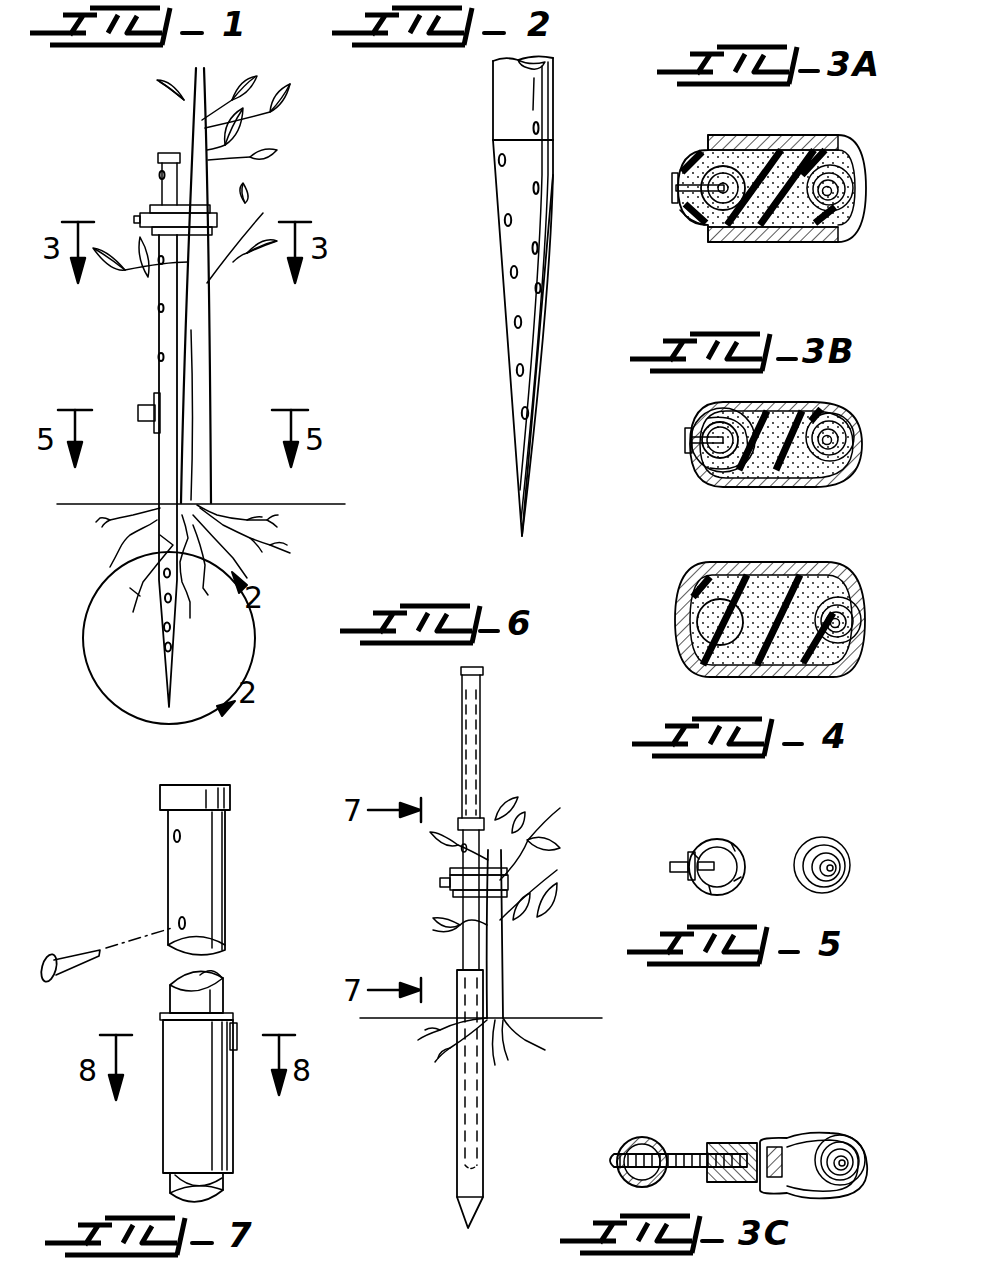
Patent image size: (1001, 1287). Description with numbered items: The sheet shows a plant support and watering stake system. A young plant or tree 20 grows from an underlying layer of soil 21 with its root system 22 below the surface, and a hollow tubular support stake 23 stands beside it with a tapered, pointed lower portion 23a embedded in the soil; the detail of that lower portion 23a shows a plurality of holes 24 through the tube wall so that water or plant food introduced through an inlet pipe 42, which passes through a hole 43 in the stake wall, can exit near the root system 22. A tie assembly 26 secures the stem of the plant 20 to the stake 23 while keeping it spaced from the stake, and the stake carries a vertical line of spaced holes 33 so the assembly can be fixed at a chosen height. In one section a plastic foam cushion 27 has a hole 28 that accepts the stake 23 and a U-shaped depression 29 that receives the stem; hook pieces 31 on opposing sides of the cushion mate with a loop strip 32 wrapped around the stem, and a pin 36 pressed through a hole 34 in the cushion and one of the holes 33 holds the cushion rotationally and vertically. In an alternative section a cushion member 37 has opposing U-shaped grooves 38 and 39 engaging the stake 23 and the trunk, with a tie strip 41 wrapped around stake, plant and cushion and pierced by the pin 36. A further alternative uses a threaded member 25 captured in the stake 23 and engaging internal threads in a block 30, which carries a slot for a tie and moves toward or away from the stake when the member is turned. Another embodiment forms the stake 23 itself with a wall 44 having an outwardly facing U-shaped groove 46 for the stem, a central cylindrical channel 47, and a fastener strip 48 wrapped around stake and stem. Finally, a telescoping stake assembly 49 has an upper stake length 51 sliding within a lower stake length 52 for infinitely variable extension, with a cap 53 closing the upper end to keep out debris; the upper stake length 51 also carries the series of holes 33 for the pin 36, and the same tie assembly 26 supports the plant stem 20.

In FIG. 1, the plant or tree 20 is at (211, 350).
In FIG. 3A, the plant or tree 20 is at (845, 172).
In FIG. 3B, the plant or tree 20 is at (845, 418).
In FIG. 4, the plant or tree 20 is at (855, 598).
In FIG. 5, the plant or tree 20 is at (795, 860).
In FIG. 3C, the plant or tree 20 is at (822, 1138).
In FIG. 6, the plant or tree 20 is at (505, 965).
In FIG. 1, the underlying layer of soil 21 is at (308, 504).
In FIG. 6, the underlying layer of soil 21 is at (583, 1018).
In FIG. 1, the root system 22 is at (272, 528).
In FIG. 6, the root system 22 is at (512, 1045).
In FIG. 1, the support stake 23 is at (158, 328).
In FIG. 3A, the support stake 23 is at (684, 166).
In FIG. 3B, the support stake 23 is at (704, 470).
In FIG. 4, the support stake 23 is at (698, 640).
In FIG. 5, the support stake 23 is at (745, 878).
In FIG. 3C, the support stake 23 is at (636, 1138).
In FIG. 1, the lower portion of stake 23a is at (168, 680).
In FIG. 2, the lower portion of stake 23a is at (508, 350).
In FIG. 1, the holes 24 is at (171, 600).
In FIG. 2, the holes 24 is at (498, 162).
In FIG. 3C, the threaded member 25 is at (680, 1170).
In FIG. 1, the tie assembly 26 is at (140, 208).
In FIG. 3A, the tie assembly 26 is at (663, 138).
In FIG. 3B, the tie assembly 26 is at (672, 466).
In FIG. 4, the tie assembly 26 is at (770, 619).
In FIG. 3C, the tie assembly 26 is at (775, 1108).
In FIG. 6, the tie assembly 26 is at (520, 877).
In FIG. 3A, the cushion 27 is at (688, 216).
In FIG. 3A, the hole 28 is at (745, 170).
In FIG. 3A, the U-shaped depression 29 is at (859, 226).
In FIG. 3C, the block 30 is at (752, 1142).
In FIG. 3A, the hook side of hook and loop fastener 31 is at (692, 146).
In FIG. 3A, the loop side strip of hook and loop fastener 32 is at (790, 136).
In FIG. 1, the spaced holes 33 is at (158, 173).
In FIG. 3A, the spaced holes 33 is at (690, 232).
In FIG. 3B, the spaced holes 33 is at (688, 440).
In FIG. 6, the spaced holes 33 is at (460, 848).
In FIG. 7, the spaced holes 33 is at (172, 838).
In FIG. 3A, the hole in cushion 34 is at (680, 197).
In FIG. 3A, the pin 36 is at (670, 184).
In FIG. 3B, the pin 36 is at (683, 430).
In FIG. 7, the pin 36 is at (40, 960).
In FIG. 3B, the cushion member 37 is at (825, 480).
In FIG. 3B, the U-shaped groove 38 is at (755, 404).
In FIG. 3B, the U-shaped groove 39 is at (798, 410).
In FIG. 3B, the tie strip 41 is at (698, 406).
In FIG. 3C, the tie strip 41 is at (858, 1128).
In FIG. 1, the inlet pipe 42 is at (143, 406).
In FIG. 5, the inlet pipe 42 is at (675, 862).
In FIG. 5, the hole 43 is at (710, 860).
In FIG. 4, the wall 44 is at (845, 672).
In FIG. 4, the U-shaped groove 46 is at (836, 585).
In FIG. 4, the cylindrical channel 47 is at (690, 662).
In FIG. 4, the hook and loop fastener strip 48 is at (700, 562).
In FIG. 6, the telescoping stake assembly 49 is at (386, 742).
In FIG. 6, the upper stake length 51 is at (481, 735).
In FIG. 7, the upper stake length 51 is at (225, 895).
In FIG. 6, the lower stake length 52 is at (457, 1110).
In FIG. 7, the lower stake length 52 is at (165, 1140).
In FIG. 6, the cap 53 is at (487, 671).
In FIG. 7, the cap 53 is at (232, 797).